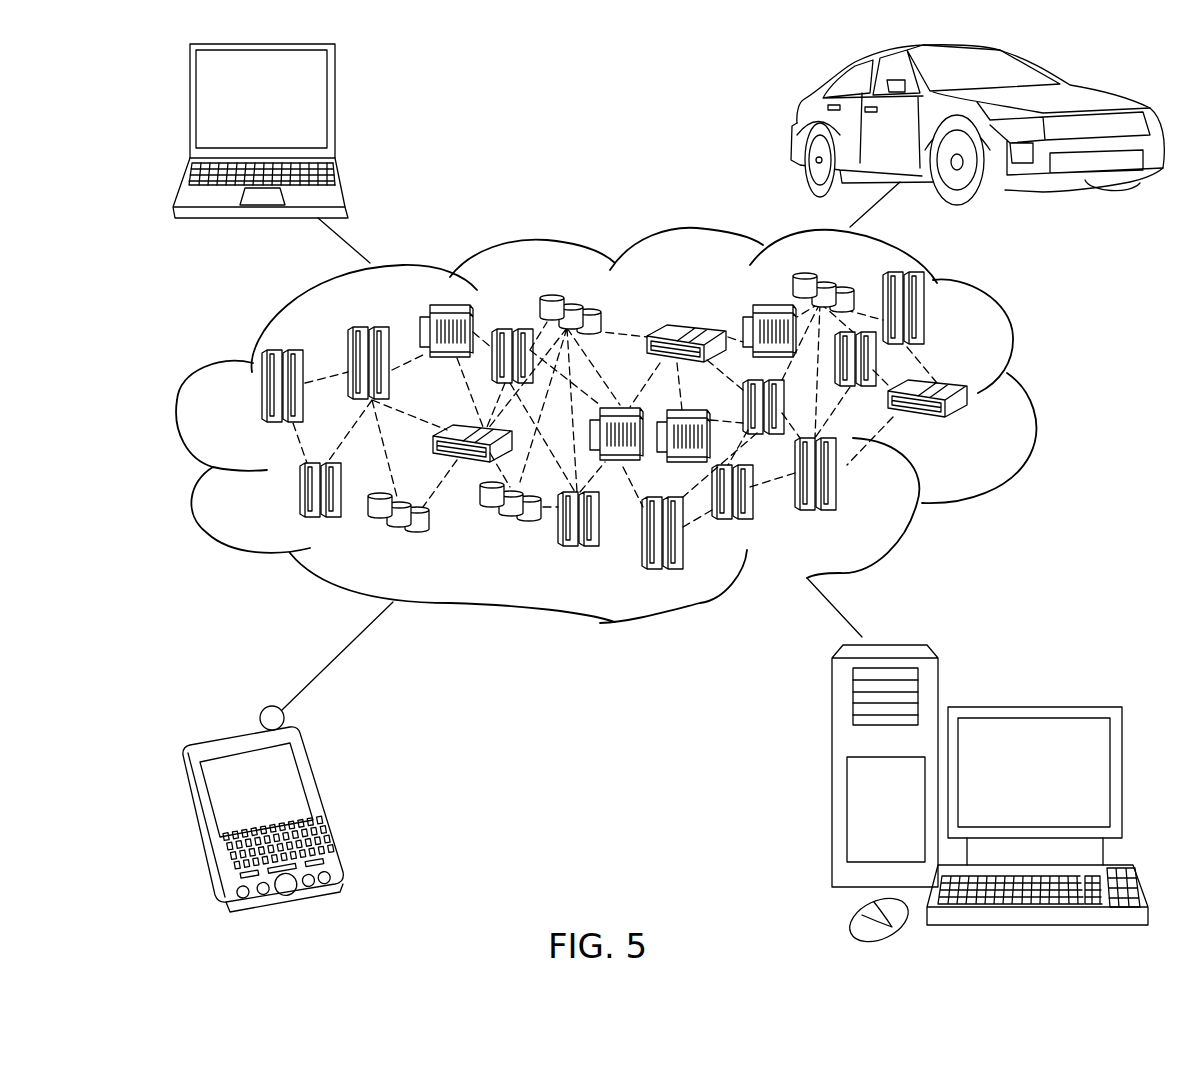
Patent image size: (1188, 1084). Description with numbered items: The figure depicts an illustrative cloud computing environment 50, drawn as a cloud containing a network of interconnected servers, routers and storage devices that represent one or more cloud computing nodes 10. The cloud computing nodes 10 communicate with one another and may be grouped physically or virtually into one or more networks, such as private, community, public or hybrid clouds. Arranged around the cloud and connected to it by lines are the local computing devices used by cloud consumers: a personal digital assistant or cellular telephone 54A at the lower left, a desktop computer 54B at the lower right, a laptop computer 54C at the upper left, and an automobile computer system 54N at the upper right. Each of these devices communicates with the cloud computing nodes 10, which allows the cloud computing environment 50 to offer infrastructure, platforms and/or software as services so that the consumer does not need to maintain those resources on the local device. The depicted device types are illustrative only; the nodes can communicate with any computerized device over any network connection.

The cloud computing node 10 is at (972, 431).
The cloud computing environment 50 is at (632, 425).
The personal digital assistant or cellular telephone 54A is at (323, 802).
The desktop computer 54B is at (1032, 706).
The laptop computer 54C is at (335, 108).
The automobile computer system 54N is at (800, 126).